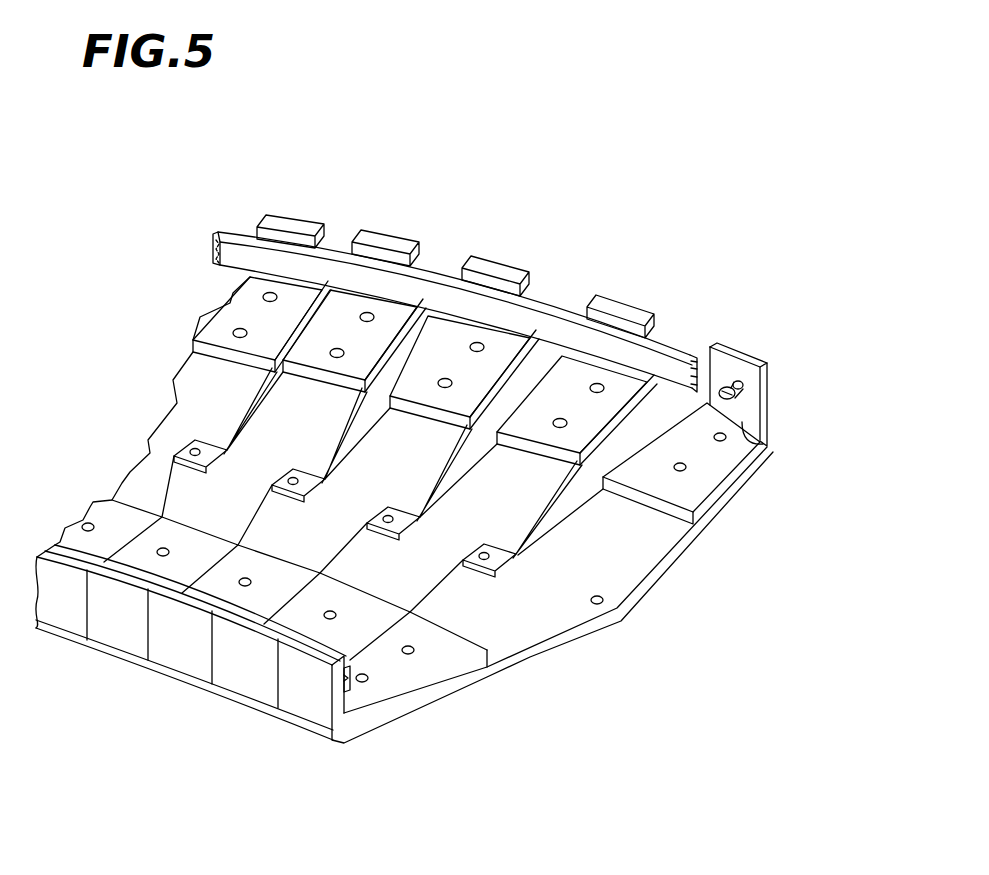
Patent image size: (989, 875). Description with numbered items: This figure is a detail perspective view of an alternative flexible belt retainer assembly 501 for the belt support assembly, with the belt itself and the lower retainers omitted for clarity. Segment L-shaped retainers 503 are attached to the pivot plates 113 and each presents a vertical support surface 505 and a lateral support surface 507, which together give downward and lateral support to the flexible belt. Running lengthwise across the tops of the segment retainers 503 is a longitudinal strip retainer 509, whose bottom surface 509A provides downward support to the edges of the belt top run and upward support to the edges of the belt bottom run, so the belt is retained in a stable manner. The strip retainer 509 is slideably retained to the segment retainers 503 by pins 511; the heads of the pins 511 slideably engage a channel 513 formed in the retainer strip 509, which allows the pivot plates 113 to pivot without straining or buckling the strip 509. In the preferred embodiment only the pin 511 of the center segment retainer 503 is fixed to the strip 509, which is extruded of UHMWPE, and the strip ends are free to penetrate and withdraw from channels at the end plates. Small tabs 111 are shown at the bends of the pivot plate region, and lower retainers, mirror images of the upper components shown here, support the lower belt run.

The flexible belt retainer assembly 501 is at (629, 231).
The segment L-shaped retainer 503 is at (770, 402).
The vertical support surface 505 is at (698, 473).
The lateral support surface 507 is at (768, 444).
The longitudinal strip retainer 509 is at (432, 270).
The bottom surface 509A is at (216, 266).
The pin 511 is at (722, 384).
The channel 513 is at (207, 243).
The tab 111 is at (487, 575).
The pivot plate 113 is at (640, 600).